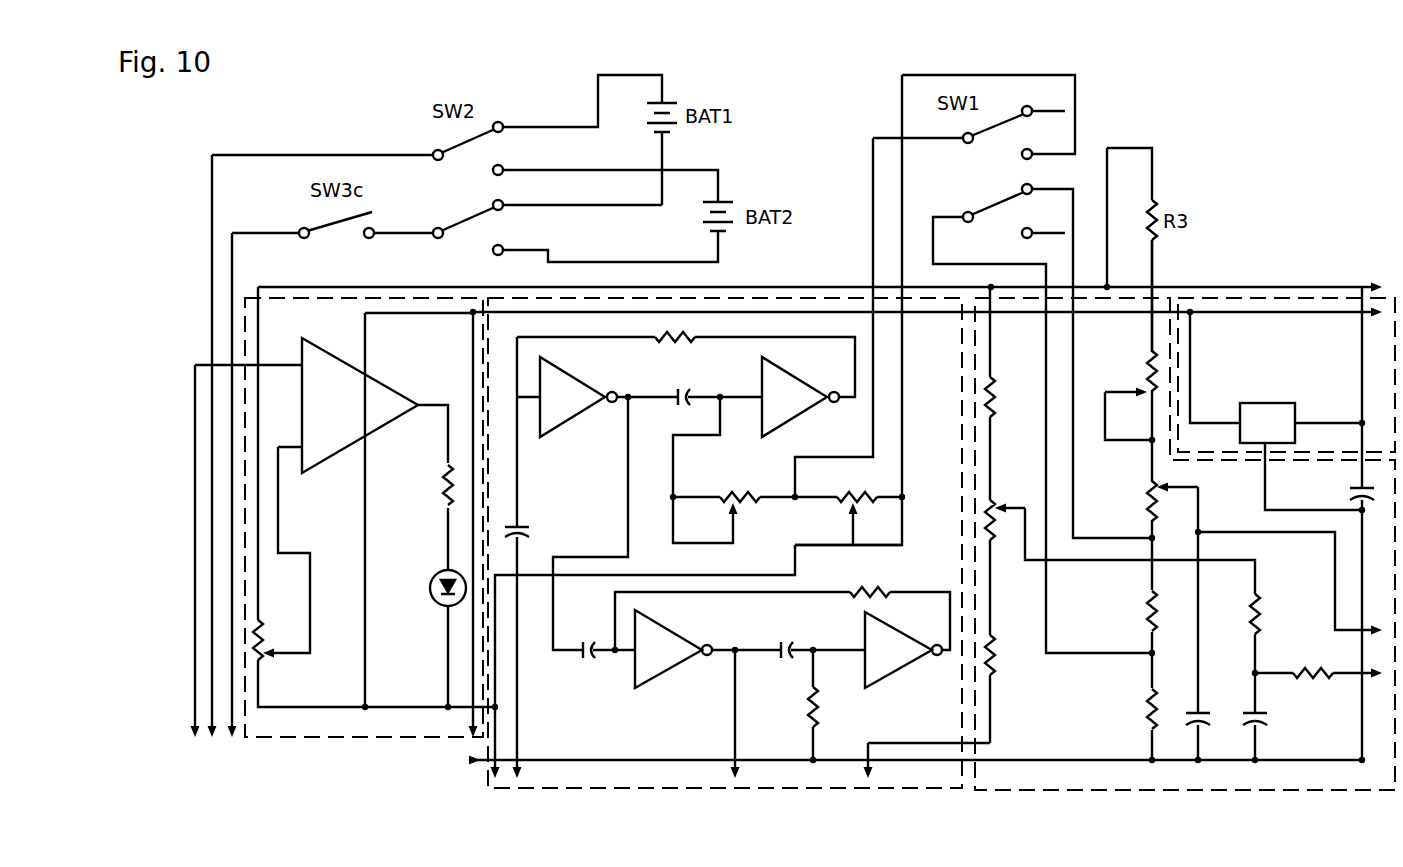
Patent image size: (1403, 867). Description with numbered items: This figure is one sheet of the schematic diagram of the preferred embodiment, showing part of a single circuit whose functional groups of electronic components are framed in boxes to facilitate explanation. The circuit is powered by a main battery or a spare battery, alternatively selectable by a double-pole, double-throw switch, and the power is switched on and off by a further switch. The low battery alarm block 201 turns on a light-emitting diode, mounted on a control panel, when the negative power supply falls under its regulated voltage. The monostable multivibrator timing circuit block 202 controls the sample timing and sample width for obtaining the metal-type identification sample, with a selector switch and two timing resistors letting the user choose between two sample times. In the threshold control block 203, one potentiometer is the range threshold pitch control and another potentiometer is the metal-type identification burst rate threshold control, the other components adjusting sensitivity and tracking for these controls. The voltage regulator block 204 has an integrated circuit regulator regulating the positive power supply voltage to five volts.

The low battery alarm block 201 is at (245, 420).
The monostable multivibrator timing circuit block 202 is at (793, 298).
The threshold control block 203 is at (1150, 790).
The voltage regulator block 204 is at (1290, 298).